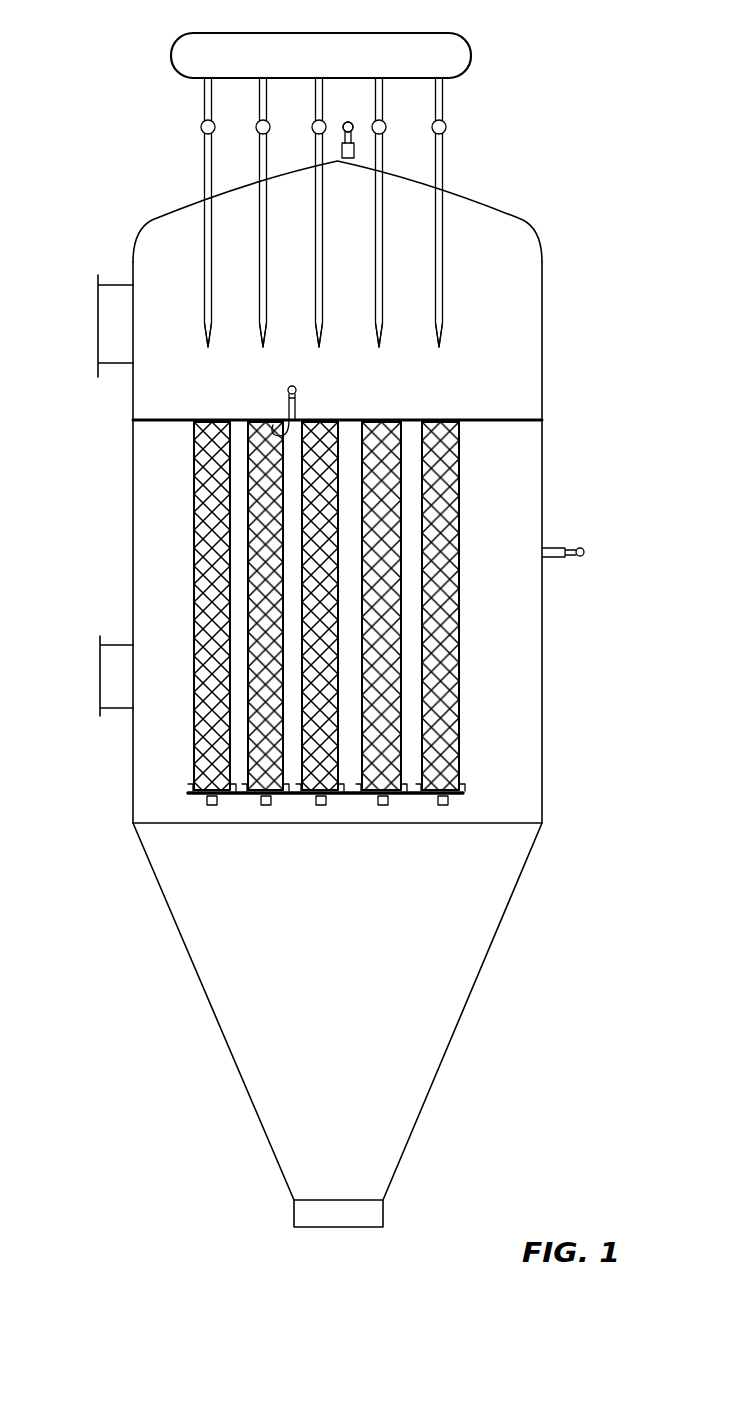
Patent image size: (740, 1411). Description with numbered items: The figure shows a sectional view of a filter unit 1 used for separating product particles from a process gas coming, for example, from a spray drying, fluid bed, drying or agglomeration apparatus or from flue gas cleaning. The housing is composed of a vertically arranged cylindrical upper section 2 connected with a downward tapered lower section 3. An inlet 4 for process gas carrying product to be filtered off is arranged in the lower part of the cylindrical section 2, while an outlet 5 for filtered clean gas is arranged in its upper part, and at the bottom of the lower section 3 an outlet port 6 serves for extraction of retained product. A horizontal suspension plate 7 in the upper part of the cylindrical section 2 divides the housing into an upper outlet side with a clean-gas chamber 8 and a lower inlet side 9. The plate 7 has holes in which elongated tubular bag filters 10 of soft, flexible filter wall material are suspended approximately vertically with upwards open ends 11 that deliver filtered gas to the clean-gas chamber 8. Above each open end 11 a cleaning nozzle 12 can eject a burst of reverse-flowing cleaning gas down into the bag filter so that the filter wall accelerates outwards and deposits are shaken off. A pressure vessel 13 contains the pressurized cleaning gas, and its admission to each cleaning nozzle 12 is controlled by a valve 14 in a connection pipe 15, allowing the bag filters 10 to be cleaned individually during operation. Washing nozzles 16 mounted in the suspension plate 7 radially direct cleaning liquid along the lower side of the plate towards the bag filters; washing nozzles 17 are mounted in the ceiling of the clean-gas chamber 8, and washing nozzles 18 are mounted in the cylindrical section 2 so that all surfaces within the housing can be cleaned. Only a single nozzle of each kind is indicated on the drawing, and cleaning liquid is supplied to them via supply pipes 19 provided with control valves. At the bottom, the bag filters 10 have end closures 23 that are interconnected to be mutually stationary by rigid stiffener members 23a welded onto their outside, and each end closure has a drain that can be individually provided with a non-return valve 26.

The filter unit 1 is at (126, 866).
The cylindrical upper section 2 is at (543, 450).
The lower section 3 is at (512, 905).
The inlet 4 is at (100, 665).
The outlet 5 is at (98, 306).
The outlet port 6 is at (370, 1228).
The suspension plate 7 is at (152, 419).
The clean-gas chamber 8 is at (520, 318).
The lower inlet side 9 is at (525, 670).
The bag filters 10 is at (200, 528).
The open ends 11 is at (318, 422).
The cleaning nozzle 12 is at (205, 345).
The pressure vessel 13 is at (446, 44).
The valve 14 is at (203, 125).
The connection pipe 15 is at (205, 252).
The washing nozzles 16 is at (273, 425).
The washing nozzles 17 is at (348, 158).
The washing nozzles 18 is at (555, 548).
The supply pipes 19 is at (349, 122).
The end closures 23 is at (462, 790).
The stiffener members 23a is at (415, 778).
The non-return valves 26 is at (266, 806).